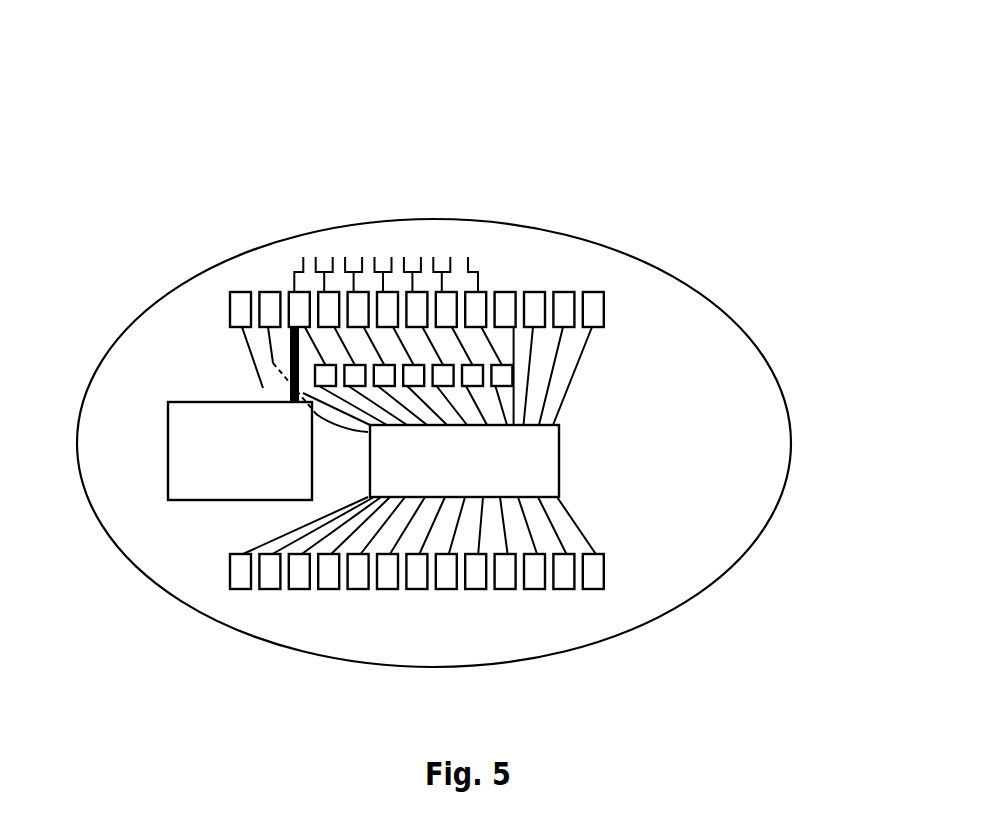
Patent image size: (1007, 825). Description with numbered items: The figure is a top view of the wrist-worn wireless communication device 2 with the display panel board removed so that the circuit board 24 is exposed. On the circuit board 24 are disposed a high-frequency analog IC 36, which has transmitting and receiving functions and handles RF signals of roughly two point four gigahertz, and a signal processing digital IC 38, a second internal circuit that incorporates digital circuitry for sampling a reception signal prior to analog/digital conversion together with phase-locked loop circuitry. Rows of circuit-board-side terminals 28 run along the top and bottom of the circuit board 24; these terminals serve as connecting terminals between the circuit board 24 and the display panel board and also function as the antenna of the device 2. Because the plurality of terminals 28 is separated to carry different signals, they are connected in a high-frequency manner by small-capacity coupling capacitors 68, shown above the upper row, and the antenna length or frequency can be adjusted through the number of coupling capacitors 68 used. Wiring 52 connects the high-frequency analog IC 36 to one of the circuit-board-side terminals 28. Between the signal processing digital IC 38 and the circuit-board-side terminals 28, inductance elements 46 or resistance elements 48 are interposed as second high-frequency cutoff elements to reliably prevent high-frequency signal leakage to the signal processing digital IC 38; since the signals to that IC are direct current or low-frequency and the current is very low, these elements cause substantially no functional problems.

The wrist-worn wireless communication device 2 is at (606, 118).
The circuit board 24 is at (195, 313).
The circuit-board-side terminals 28 is at (603, 307).
The high-frequency analog IC 36 is at (215, 443).
The signal processing digital IC 38 is at (547, 459).
The inductance elements 46 is at (572, 328).
The resistance elements 48 is at (506, 375).
The wiring 52 is at (291, 383).
The coupling capacitors 68 is at (468, 258).